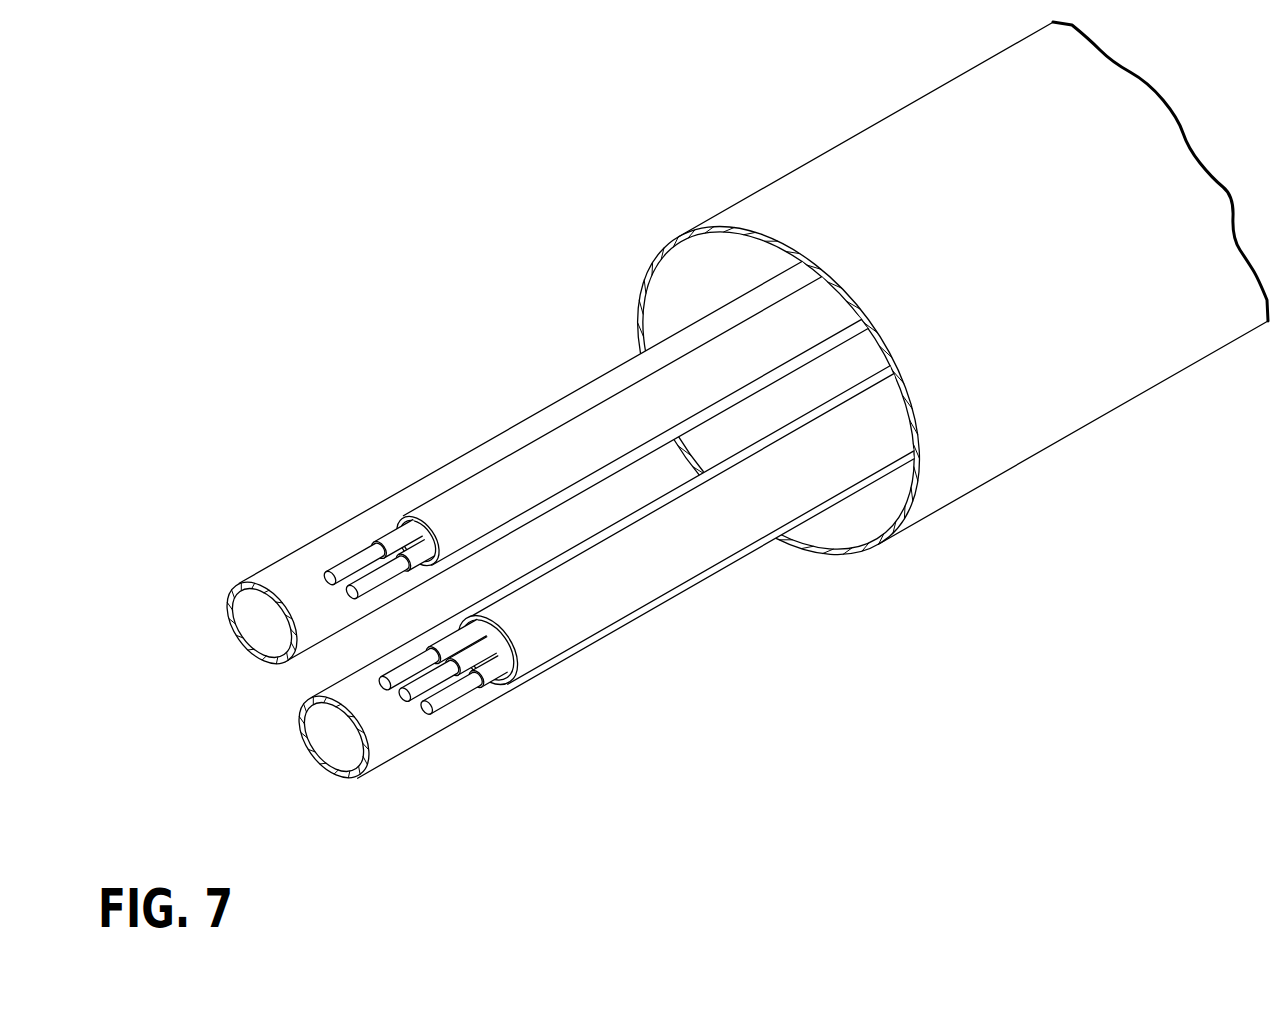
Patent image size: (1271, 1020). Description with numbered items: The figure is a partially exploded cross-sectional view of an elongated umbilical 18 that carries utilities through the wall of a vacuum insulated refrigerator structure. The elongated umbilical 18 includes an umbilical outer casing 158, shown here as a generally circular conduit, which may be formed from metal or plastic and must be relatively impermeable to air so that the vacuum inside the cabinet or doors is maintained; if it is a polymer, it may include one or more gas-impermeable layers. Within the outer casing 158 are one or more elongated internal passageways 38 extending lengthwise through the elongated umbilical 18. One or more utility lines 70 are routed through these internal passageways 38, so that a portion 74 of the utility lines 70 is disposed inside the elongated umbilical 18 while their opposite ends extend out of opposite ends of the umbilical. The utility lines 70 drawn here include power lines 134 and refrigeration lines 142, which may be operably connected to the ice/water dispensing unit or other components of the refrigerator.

The elongated umbilical 18 is at (1028, 468).
The umbilical outer casing 158 is at (948, 510).
The elongated internal passageway 38 is at (855, 523).
The portion of the utility lines 74 is at (778, 346).
The refrigeration line 142 is at (266, 664).
The power line 134 is at (355, 597).
The utility lines 70 is at (563, 582).